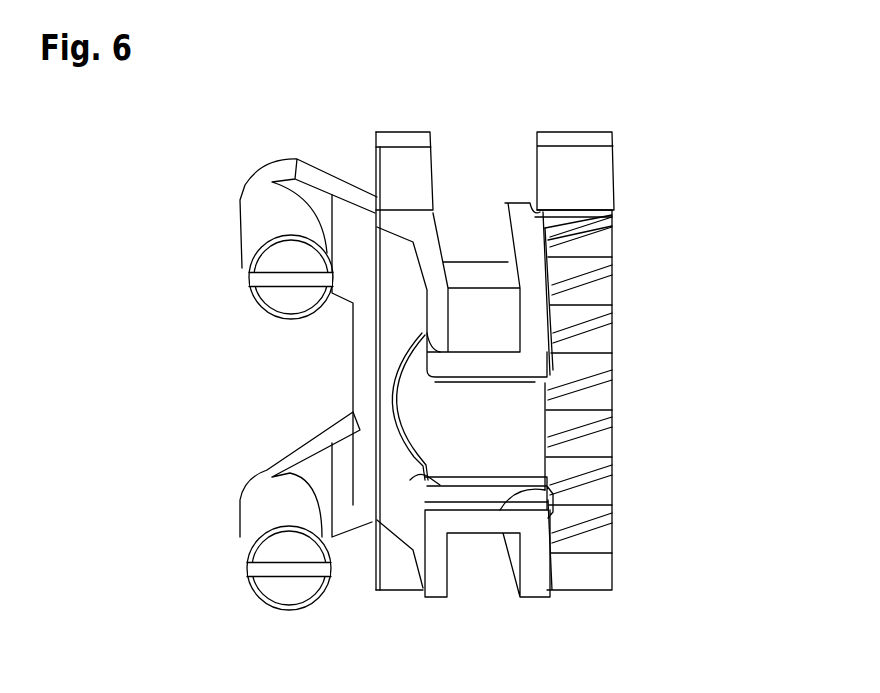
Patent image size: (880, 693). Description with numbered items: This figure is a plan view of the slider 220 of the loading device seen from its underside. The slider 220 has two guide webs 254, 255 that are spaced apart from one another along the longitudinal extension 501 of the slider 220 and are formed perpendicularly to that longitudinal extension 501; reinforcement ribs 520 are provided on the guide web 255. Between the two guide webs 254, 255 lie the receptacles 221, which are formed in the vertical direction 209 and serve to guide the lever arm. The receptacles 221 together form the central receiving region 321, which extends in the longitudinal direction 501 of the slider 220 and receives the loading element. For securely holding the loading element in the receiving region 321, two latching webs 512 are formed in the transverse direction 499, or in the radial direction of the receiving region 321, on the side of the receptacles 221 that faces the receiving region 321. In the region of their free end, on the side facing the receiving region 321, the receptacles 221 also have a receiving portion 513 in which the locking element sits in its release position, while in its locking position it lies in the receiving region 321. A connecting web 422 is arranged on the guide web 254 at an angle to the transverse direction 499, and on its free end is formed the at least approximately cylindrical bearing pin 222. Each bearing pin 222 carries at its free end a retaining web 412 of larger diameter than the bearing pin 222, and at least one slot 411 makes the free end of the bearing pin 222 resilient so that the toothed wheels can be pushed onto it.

The vertical direction 209 is at (121, 347).
The slider 220 is at (128, 240).
The receptacles 221 is at (445, 240).
The bearing pin 222 is at (258, 185).
The guide web 254 is at (404, 137).
The guide web 255 is at (572, 140).
The receiving region 321 is at (403, 387).
The slot 411 is at (257, 282).
The retaining web 412 is at (267, 250).
The connecting web 422 is at (353, 223).
The transverse direction 499 is at (700, 302).
The longitudinal extension 501 is at (700, 457).
The latching web 512 is at (447, 383).
The receiving portion 513 is at (545, 490).
The reinforcement ribs 520 is at (622, 238).